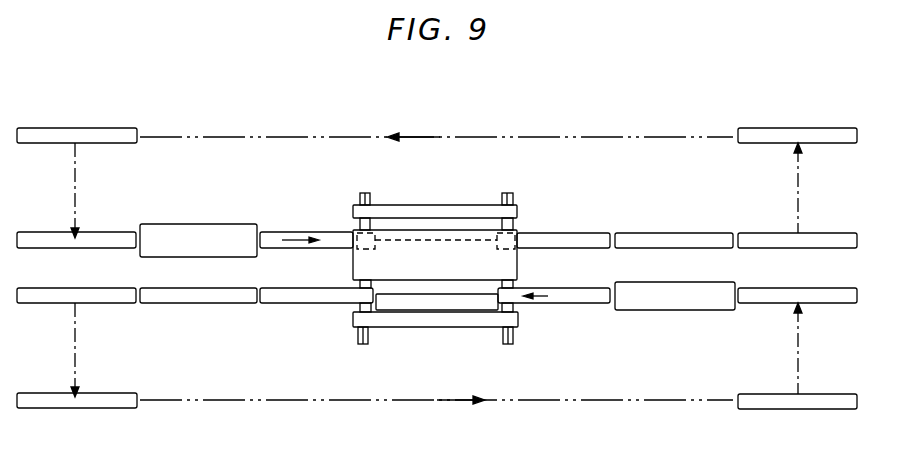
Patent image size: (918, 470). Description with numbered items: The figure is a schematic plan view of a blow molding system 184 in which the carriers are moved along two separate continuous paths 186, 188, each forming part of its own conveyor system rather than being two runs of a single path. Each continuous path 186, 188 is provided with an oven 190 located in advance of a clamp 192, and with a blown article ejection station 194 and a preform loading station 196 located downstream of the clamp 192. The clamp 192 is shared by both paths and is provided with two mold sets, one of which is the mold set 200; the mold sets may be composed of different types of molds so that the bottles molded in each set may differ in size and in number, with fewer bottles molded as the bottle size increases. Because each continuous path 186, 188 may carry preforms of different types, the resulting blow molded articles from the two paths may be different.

The blow molding system 184 is at (521, 79).
The continuous path 186 is at (573, 137).
The continuous path 188 is at (830, 291).
The oven 190 is at (212, 225).
The clamp 192 is at (509, 262).
The blown article ejection station 194 is at (556, 240).
The preform loading station 196 is at (667, 242).
The mold set 200 is at (427, 302).